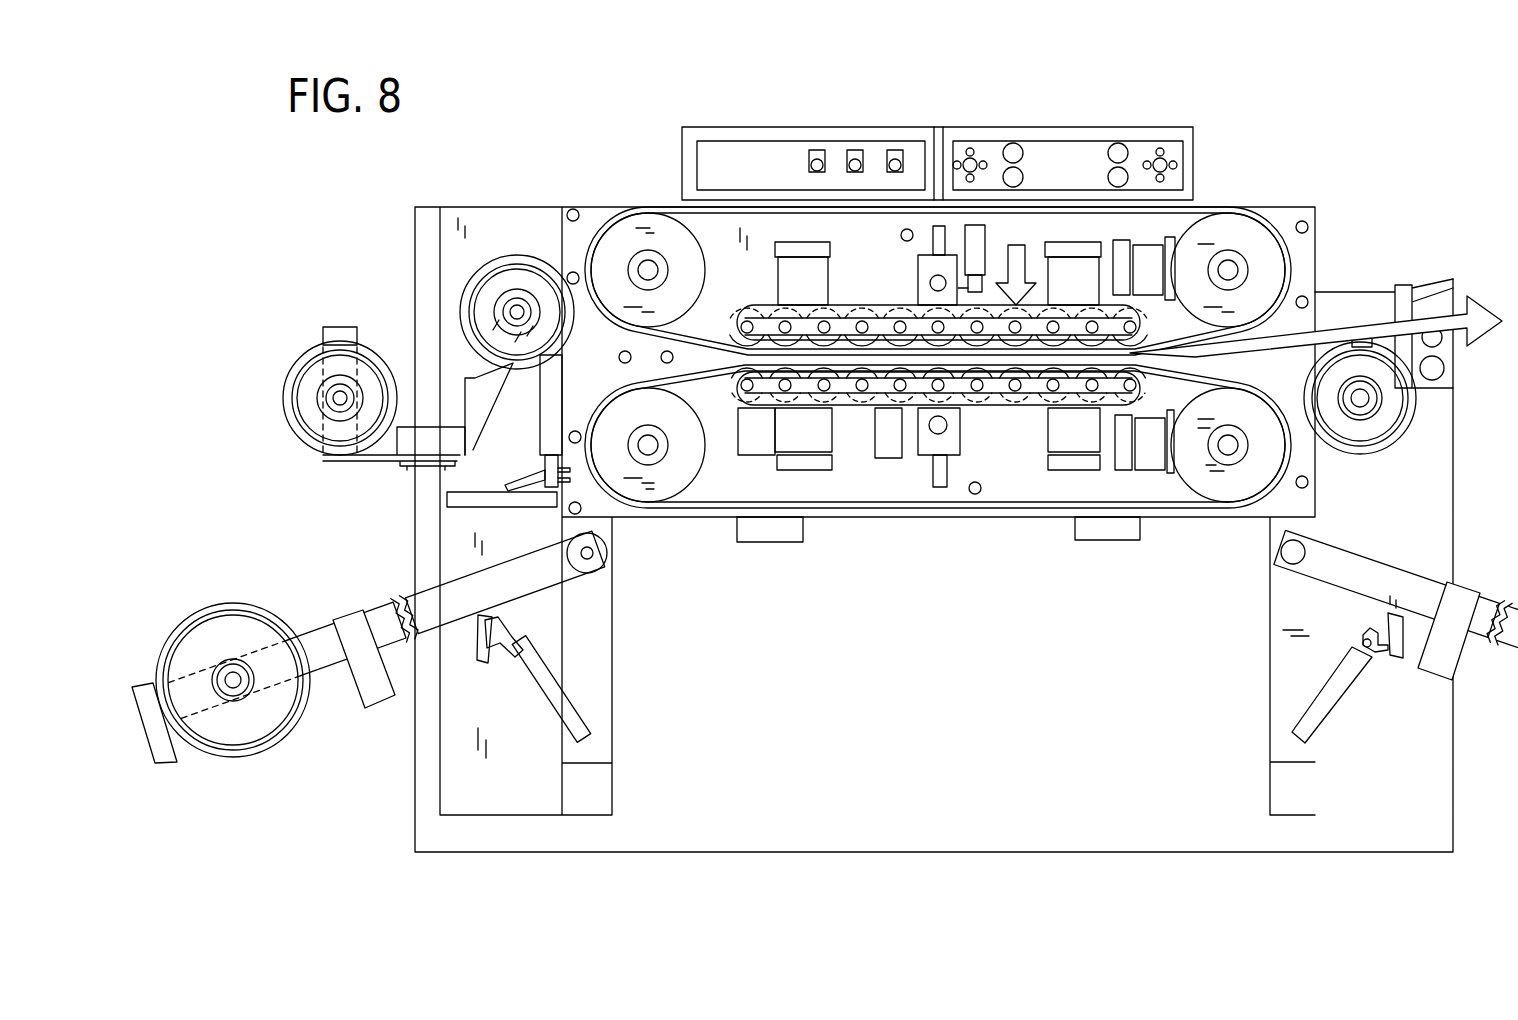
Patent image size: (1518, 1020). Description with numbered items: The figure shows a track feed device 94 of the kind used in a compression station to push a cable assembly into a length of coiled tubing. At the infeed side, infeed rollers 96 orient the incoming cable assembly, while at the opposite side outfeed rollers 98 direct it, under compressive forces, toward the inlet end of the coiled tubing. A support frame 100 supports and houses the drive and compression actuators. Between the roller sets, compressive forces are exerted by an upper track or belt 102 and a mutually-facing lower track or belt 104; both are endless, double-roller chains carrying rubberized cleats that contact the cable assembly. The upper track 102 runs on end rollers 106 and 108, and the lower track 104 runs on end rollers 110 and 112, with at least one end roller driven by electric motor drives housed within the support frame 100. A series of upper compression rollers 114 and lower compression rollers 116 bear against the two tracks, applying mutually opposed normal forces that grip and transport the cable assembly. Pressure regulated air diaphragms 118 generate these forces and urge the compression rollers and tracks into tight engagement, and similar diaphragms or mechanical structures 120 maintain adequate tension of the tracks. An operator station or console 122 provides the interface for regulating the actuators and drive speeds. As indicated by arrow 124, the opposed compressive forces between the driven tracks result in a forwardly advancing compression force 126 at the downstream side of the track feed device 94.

The track feed device 94 is at (390, 228).
The infeed rollers 96 is at (468, 302).
The outfeed rollers 98 is at (1385, 440).
The support frame 100 is at (440, 785).
The upper track or belt 102 is at (672, 208).
The lower track or belt 104 is at (725, 495).
The end roller 106 is at (622, 238).
The end roller 108 is at (1232, 222).
The end roller 110 is at (665, 487).
The end roller 112 is at (1228, 487).
The upper compression rollers 114 is at (897, 342).
The lower compression rollers 116 is at (1045, 402).
The pressure regulated air diaphragms 118 is at (819, 293).
The track tensioning diaphragms or mechanical structures 120 is at (1150, 250).
The operator station or console 122 is at (932, 127).
The arrow indicating compressive forces 124 is at (1015, 245).
The forwardly advancing compression force 126 is at (1462, 296).